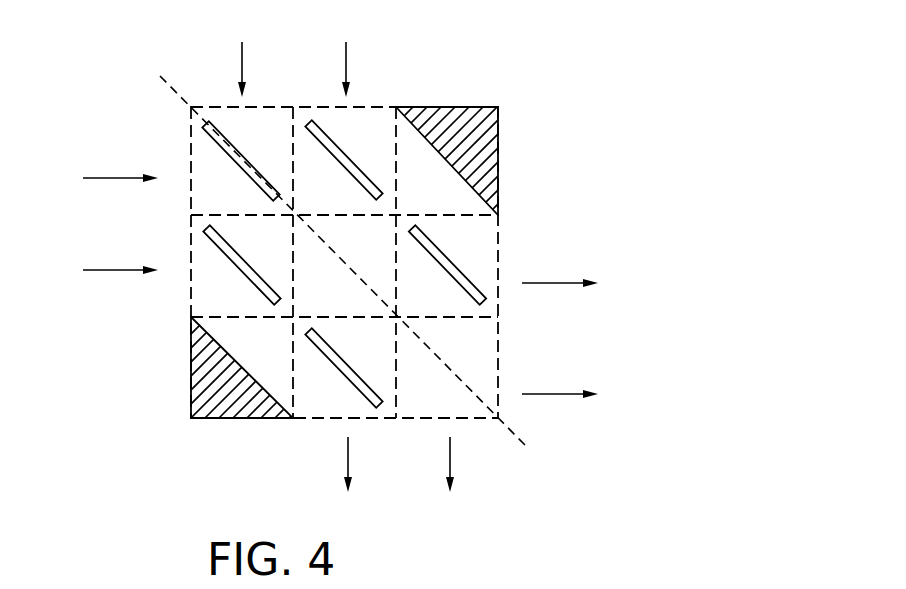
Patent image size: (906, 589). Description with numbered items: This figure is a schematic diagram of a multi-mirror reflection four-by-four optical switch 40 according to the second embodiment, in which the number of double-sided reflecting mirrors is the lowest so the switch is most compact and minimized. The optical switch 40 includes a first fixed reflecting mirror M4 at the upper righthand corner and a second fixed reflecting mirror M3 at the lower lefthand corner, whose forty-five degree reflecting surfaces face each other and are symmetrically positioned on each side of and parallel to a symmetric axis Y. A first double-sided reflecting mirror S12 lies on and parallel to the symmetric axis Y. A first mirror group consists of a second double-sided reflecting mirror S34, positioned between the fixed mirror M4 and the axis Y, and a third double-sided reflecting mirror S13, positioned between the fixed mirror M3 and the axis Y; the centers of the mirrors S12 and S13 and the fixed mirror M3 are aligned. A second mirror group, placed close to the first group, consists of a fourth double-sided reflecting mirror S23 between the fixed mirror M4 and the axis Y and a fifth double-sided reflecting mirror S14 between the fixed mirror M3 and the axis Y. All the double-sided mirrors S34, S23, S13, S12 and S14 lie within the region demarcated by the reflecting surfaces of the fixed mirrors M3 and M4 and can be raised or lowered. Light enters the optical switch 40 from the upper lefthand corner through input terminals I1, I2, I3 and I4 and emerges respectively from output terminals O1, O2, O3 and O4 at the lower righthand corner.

The optical switch 40 is at (539, 83).
The second fixed reflecting mirror M3 is at (193, 385).
The first fixed reflecting mirror M4 is at (497, 147).
The first double-sided reflecting mirror S12 is at (240, 166).
The second double-sided reflecting mirror S34 is at (343, 165).
The third double-sided reflecting mirror S13 is at (241, 270).
The fourth double-sided reflecting mirror S23 is at (447, 270).
The fifth double-sided reflecting mirror S14 is at (343, 372).
The input terminal I1 is at (235, 49).
The input terminal I2 is at (101, 177).
The input terminal I3 is at (101, 271).
The input terminal I4 is at (339, 49).
The output terminal O1 is at (582, 393).
The output terminal O2 is at (458, 485).
The output terminal O3 is at (582, 282).
The output terminal O4 is at (356, 485).
The symmetric axis Y is at (138, 67).